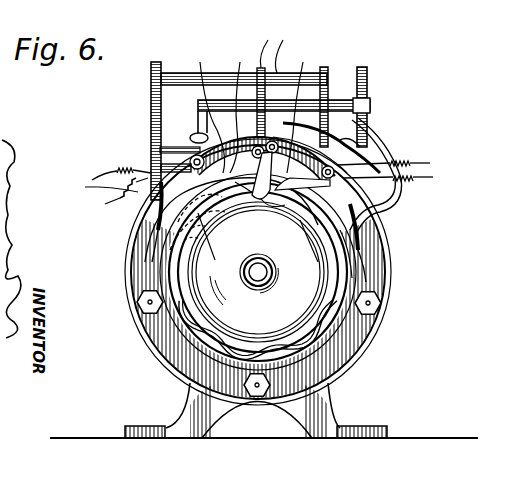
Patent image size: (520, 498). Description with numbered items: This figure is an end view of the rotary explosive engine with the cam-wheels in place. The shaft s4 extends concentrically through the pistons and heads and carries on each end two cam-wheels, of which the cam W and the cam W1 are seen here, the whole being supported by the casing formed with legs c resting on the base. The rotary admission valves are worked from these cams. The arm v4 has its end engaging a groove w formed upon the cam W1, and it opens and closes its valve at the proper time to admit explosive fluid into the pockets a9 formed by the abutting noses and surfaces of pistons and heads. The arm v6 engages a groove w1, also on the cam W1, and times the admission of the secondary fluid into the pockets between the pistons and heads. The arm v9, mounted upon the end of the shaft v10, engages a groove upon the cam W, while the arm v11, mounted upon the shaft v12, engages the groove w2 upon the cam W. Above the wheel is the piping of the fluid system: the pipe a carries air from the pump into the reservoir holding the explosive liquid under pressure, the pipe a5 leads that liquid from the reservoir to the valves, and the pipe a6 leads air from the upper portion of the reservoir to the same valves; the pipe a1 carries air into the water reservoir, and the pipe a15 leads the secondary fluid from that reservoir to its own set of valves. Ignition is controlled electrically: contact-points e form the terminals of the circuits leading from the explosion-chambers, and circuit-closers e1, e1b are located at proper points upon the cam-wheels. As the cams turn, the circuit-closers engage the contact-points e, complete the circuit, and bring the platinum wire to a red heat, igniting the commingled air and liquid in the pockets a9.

The pipe a is at (258, 74).
The pipe a1 is at (151, 64).
The pipe a5 is at (197, 118).
The pipe a6 is at (151, 100).
The pockets a9 is at (386, 318).
The pipe a15 is at (279, 47).
The legs c is at (322, 422).
The contact-points e is at (178, 208).
The circuit-closers e1 is at (308, 220).
The circuit-closer e1b is at (366, 246).
The shaft s4 is at (257, 273).
The arm v4 is at (110, 186).
The arm v6 is at (262, 114).
The arm v9 is at (251, 120).
The shaft v10 is at (302, 117).
The arm v11 is at (345, 160).
The shaft v12 is at (392, 167).
The cam-wheel W is at (258, 272).
The cam-wheel W1 is at (172, 240).
The groove w is at (178, 252).
The groove w1 is at (242, 252).
The groove w2 is at (345, 282).